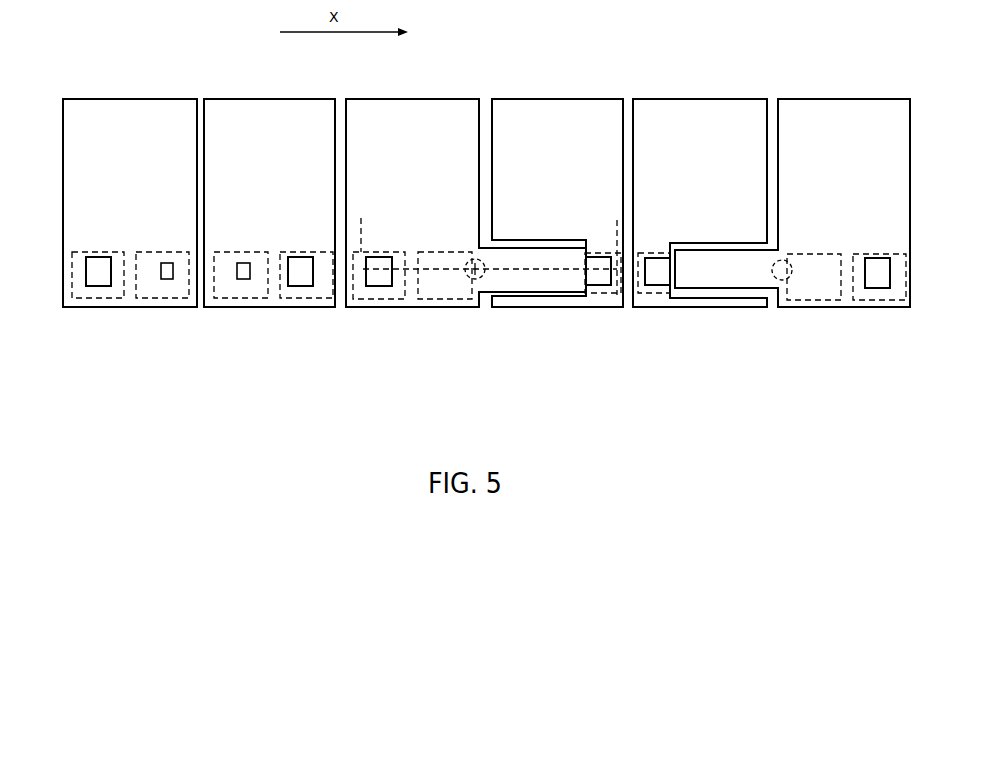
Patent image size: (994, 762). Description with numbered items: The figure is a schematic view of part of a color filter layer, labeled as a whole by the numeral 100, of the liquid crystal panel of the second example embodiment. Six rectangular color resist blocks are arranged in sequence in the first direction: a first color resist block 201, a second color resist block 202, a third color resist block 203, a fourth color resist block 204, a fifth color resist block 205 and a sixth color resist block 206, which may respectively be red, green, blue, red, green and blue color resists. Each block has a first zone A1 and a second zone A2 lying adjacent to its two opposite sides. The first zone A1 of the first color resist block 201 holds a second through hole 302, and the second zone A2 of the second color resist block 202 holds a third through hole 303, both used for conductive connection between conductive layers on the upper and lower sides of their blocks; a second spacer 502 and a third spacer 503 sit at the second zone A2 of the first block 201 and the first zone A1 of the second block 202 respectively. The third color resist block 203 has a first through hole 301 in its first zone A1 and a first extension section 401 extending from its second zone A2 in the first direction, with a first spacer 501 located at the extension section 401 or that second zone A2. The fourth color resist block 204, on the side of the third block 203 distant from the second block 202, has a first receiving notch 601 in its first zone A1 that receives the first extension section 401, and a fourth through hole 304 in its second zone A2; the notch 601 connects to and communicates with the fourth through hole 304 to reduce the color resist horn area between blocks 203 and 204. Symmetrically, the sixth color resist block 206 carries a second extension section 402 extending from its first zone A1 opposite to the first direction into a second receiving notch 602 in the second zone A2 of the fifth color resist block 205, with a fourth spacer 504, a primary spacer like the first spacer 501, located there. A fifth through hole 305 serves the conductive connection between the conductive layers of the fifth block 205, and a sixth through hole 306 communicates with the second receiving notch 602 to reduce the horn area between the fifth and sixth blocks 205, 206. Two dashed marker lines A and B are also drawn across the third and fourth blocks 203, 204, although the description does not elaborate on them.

The pixel arrangement / display panel 100 is at (106, 50).
The first color resist block 201 is at (192, 115).
The second color resist block 202 is at (288, 108).
The third color resist block 203 is at (453, 108).
The fourth color resist block 204 is at (587, 115).
The fifth color resist block 205 is at (716, 115).
The sixth color resist block 206 is at (843, 112).
The first through hole 301 is at (382, 283).
The second through hole 302 is at (103, 283).
The third through hole 303 is at (305, 283).
The fourth through hole 304 is at (600, 278).
The fifth through hole 305 is at (660, 283).
The sixth through hole 306 is at (878, 283).
The first extension section 401 is at (520, 280).
The second extension section 402 is at (713, 282).
The first spacer 501 is at (470, 278).
The second spacer 502 is at (168, 277).
The third spacer 503 is at (245, 277).
The fourth spacer 504 is at (782, 280).
The first receiving notch 601 is at (565, 288).
The second receiving notch 602 is at (748, 294).
The first zone A1 is at (833, 292).
The second zone A2 is at (430, 295).
The section line A is at (359, 227).
The section line B is at (616, 250).